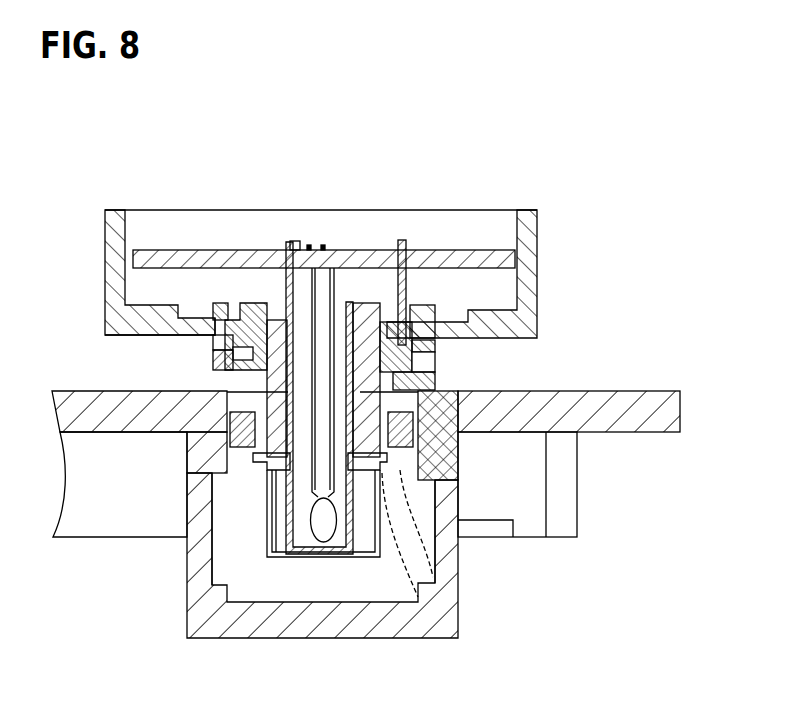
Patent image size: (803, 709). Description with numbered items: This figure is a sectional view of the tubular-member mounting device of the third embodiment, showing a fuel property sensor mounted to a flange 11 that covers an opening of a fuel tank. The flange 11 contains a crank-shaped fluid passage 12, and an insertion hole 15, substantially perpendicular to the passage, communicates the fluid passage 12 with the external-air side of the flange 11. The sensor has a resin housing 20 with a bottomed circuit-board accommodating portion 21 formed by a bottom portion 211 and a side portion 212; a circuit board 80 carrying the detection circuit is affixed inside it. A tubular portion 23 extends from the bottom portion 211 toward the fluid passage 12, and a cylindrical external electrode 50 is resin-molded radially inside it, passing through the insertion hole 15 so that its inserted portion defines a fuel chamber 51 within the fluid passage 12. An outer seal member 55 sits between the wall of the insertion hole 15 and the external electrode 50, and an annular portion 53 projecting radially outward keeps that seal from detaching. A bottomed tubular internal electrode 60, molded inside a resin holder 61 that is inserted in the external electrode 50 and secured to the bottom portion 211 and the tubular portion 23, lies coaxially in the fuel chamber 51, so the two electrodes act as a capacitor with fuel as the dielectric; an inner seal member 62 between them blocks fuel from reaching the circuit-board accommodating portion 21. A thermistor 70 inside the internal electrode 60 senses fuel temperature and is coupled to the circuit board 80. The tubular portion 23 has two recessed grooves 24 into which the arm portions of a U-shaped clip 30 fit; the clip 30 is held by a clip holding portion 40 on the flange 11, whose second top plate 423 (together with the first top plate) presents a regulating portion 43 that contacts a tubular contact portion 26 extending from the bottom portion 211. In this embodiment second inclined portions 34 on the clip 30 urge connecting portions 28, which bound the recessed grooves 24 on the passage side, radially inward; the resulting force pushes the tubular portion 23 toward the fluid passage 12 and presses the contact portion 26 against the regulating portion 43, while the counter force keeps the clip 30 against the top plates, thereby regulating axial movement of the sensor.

The flange 11 is at (628, 400).
The fluid passage 12 is at (322, 550).
The insertion hole 15 is at (243, 463).
The housing 20 is at (294, 258).
The circuit-board accommodating portion 21 is at (172, 228).
The tubular portion 23 is at (187, 457).
The recessed groove 24 is at (435, 365).
The contact portion 26 is at (225, 353).
The connecting portion 28 is at (435, 382).
The clip 30 is at (215, 380).
The second inclined portion 34 is at (187, 435).
The clip holding portion 40 is at (233, 367).
The regulating portion 43 is at (212, 343).
The external electrode 50 is at (324, 577).
The fuel chamber 51 is at (281, 535).
The annular portion 53 is at (458, 593).
The outer seal member 55 is at (457, 547).
The internal electrode 60 is at (320, 463).
The holder 61 is at (373, 318).
The inner seal member 62 is at (412, 602).
The thermistor 70 is at (313, 532).
The circuit board 80 is at (258, 250).
The bottom portion 211 is at (116, 332).
The side portion 212 is at (112, 275).
The second top plate 423 is at (437, 357).